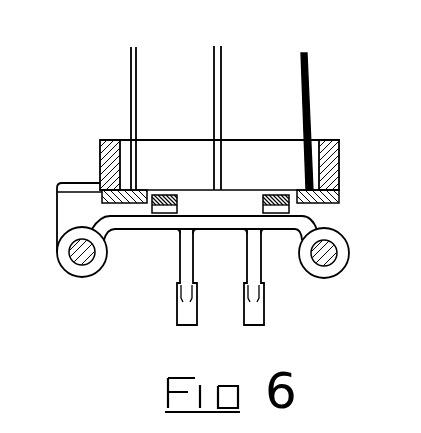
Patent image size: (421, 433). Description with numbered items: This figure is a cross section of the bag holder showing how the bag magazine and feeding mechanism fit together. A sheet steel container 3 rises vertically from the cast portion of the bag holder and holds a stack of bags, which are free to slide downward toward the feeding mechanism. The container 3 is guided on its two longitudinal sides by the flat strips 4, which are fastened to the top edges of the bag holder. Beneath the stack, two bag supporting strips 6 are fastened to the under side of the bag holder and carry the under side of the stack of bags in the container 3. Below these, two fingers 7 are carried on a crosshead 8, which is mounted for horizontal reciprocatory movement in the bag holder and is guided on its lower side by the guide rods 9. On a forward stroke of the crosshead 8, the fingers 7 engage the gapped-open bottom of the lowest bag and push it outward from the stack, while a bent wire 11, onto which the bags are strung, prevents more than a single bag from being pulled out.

The sheet steel container 3 is at (137, 72).
The bent wire 11 is at (222, 90).
The flat strips 4 is at (108, 139).
The bag supporting strips 6 is at (101, 201).
The fingers 7 is at (178, 207).
The crosshead 8 is at (349, 253).
The guide rods 9 is at (61, 266).